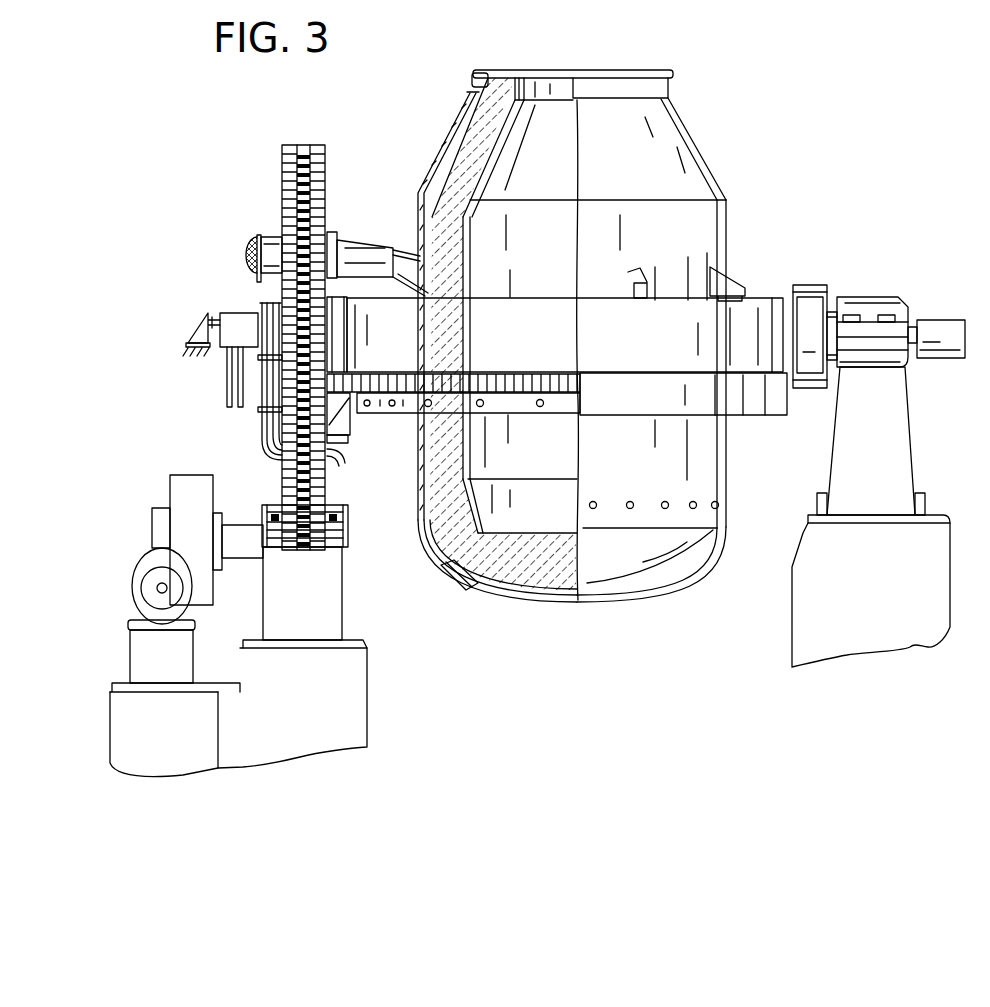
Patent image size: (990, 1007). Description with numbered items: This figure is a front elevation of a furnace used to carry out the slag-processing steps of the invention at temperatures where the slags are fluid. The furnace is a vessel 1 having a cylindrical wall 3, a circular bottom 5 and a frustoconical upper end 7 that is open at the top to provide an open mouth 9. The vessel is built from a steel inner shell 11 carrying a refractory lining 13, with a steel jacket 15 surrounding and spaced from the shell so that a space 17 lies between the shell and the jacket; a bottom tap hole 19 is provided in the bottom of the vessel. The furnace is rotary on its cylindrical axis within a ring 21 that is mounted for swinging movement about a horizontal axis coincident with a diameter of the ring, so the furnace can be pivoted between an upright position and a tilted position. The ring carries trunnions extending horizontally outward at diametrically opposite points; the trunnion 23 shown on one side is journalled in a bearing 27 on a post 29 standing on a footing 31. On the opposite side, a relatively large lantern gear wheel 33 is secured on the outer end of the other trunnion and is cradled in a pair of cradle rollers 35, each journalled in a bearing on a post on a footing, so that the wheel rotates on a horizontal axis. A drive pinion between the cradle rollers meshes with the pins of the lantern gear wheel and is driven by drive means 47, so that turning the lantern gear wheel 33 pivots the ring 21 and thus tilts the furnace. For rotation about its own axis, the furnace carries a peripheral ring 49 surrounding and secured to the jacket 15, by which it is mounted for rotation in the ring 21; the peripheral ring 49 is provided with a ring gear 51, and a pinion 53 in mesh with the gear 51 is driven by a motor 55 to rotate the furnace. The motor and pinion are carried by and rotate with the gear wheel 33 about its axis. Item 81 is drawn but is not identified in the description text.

The vessel 1 is at (737, 210).
The cylindrical wall 3 is at (728, 490).
The circular bottom 5 is at (640, 595).
The frustoconical upper end 7 is at (715, 173).
The open mouth 9 is at (557, 82).
The steel inner shell 11 is at (437, 248).
The refractory lining 13 is at (450, 278).
The steel jacket 15 is at (458, 118).
The space between the shell and the jacket 17 is at (453, 170).
The bottom tap hole 19 is at (460, 587).
The ring 21 is at (752, 297).
The trunnion 23 is at (828, 296).
The bearing 27 is at (892, 294).
The post 29 is at (913, 433).
The footing 31 is at (884, 588).
The lantern gear wheel 33 is at (278, 152).
The cradle rollers 35 is at (300, 548).
The drive means 47 is at (126, 572).
The peripheral ring 49 is at (558, 414).
The ring gear 51 is at (553, 379).
The pinion 53 is at (352, 382).
The motor 55 is at (347, 440).
The motor 81 is at (262, 237).